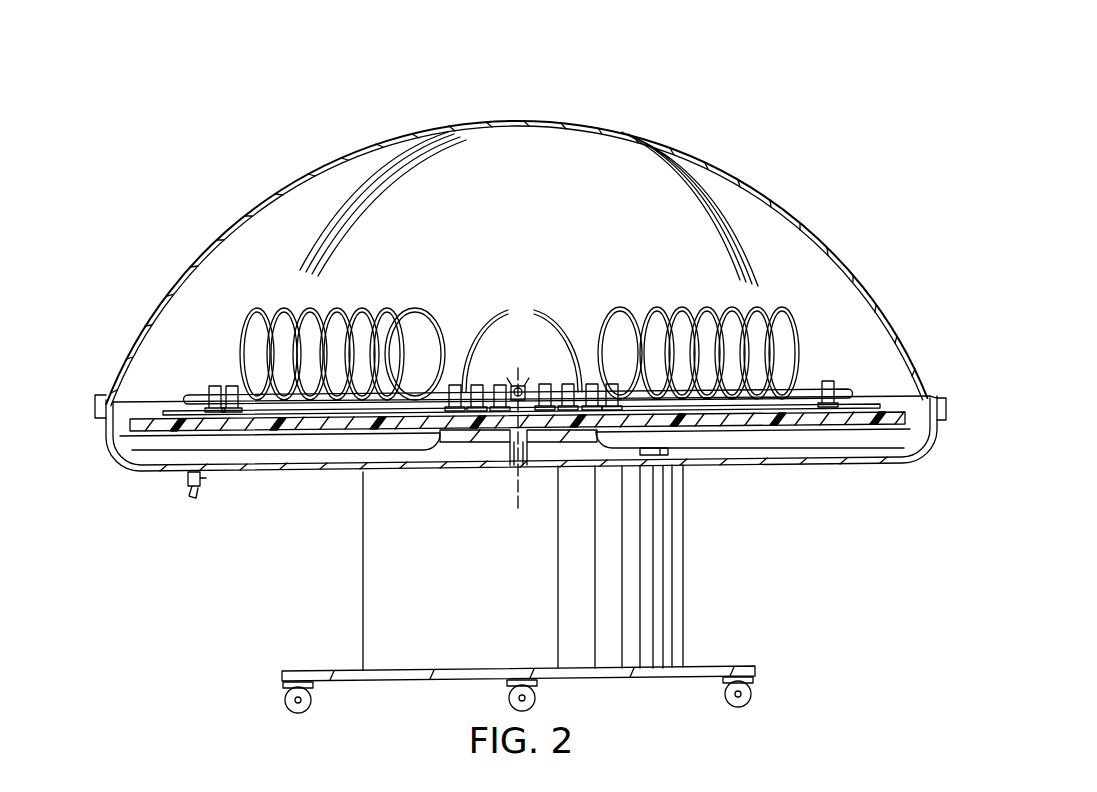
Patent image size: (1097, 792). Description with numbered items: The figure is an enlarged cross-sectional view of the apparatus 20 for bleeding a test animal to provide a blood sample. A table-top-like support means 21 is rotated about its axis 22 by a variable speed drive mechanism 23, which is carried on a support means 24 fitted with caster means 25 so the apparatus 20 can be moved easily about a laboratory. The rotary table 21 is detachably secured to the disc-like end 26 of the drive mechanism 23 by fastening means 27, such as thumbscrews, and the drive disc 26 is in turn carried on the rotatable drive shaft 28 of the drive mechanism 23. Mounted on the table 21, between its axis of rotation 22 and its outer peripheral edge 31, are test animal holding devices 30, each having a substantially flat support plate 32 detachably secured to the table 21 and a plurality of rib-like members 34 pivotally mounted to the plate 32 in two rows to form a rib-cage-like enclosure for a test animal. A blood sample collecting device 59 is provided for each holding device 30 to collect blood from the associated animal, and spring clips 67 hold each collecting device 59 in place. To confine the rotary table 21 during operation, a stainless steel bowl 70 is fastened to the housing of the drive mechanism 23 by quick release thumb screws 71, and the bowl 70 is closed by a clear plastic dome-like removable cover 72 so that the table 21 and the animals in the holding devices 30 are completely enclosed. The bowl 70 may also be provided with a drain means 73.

The apparatus 20 is at (820, 95).
The dome-like removable cover 72 is at (800, 218).
The holding device 30 is at (510, 326).
The rib-like member 34 is at (234, 336).
The spring clip 67 is at (488, 388).
The fastening means 27 is at (565, 392).
The blood sample collecting device 59 is at (202, 393).
The support member or plate 32 is at (170, 404).
The table-top-like support means 21 is at (890, 414).
The disc-like end 26 is at (440, 433).
The drive shaft 28 is at (510, 454).
The axis 22 is at (517, 492).
The quick release thumb screw 71 is at (665, 451).
The outer peripheral edge 31 is at (903, 423).
The stainless steel bowl 70 is at (863, 466).
The drain means 73 is at (186, 478).
The variable speed drive mechanism 23 is at (668, 556).
The support means 24 is at (720, 668).
The caster means 25 is at (287, 700).